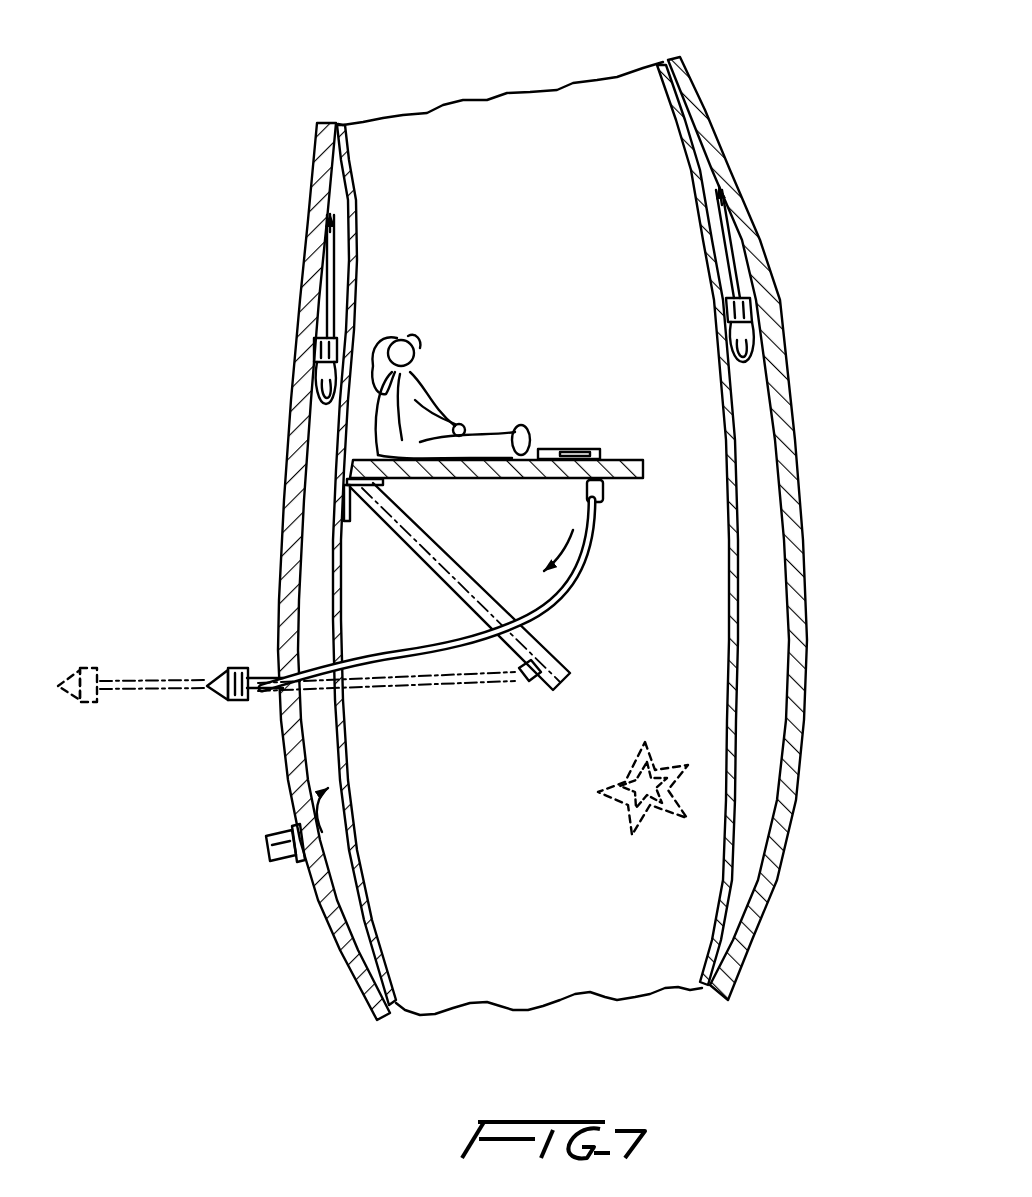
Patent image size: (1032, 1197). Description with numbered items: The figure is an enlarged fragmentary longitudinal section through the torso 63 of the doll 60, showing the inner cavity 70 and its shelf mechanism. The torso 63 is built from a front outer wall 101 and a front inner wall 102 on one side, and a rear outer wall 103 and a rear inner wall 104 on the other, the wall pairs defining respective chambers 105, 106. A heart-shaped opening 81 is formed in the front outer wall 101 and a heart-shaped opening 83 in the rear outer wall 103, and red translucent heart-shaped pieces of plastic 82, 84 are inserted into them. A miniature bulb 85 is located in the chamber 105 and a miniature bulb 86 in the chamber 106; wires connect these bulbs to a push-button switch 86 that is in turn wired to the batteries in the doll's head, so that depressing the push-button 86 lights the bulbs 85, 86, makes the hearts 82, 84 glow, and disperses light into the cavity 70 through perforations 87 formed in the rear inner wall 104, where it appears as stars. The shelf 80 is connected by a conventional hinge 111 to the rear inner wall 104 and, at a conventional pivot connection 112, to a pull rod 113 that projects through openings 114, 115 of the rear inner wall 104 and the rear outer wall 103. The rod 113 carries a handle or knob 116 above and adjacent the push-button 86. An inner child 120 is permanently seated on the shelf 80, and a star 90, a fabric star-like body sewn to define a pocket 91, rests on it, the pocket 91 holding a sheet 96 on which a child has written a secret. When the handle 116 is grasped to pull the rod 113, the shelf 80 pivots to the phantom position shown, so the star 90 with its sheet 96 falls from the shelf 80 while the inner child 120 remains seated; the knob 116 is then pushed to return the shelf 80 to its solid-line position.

The doll 60 is at (852, 58).
The torso 63 is at (758, 242).
The inner cavity 70 is at (568, 126).
The shelf 80 is at (508, 482).
The heart-shaped opening 81 is at (768, 300).
The heart-shaped piece of plastic 82 is at (772, 346).
The heart-shaped opening 83 is at (303, 342).
The heart-shaped piece of plastic 84 is at (304, 383).
The miniature bulb 85 is at (758, 344).
The miniature bulb / push-button switch 86 is at (304, 418).
The perforations 87 is at (356, 255).
The star 90 is at (615, 448).
The pocket 91 is at (664, 790).
The sheet 96 is at (546, 446).
The front outer wall 101 is at (788, 490).
The front inner wall 102 is at (728, 540).
The rear outer wall 103 is at (288, 538).
The rear inner wall 104 is at (355, 848).
The chamber 105 is at (776, 567).
The chamber 106 is at (330, 756).
The hinge 111 is at (348, 504).
The pivot connection 112 is at (603, 490).
The pull rod 113 is at (554, 596).
The opening 114 is at (345, 673).
The opening 115 is at (272, 670).
The handle or knob 116 is at (90, 703).
The inner child 120 is at (426, 403).